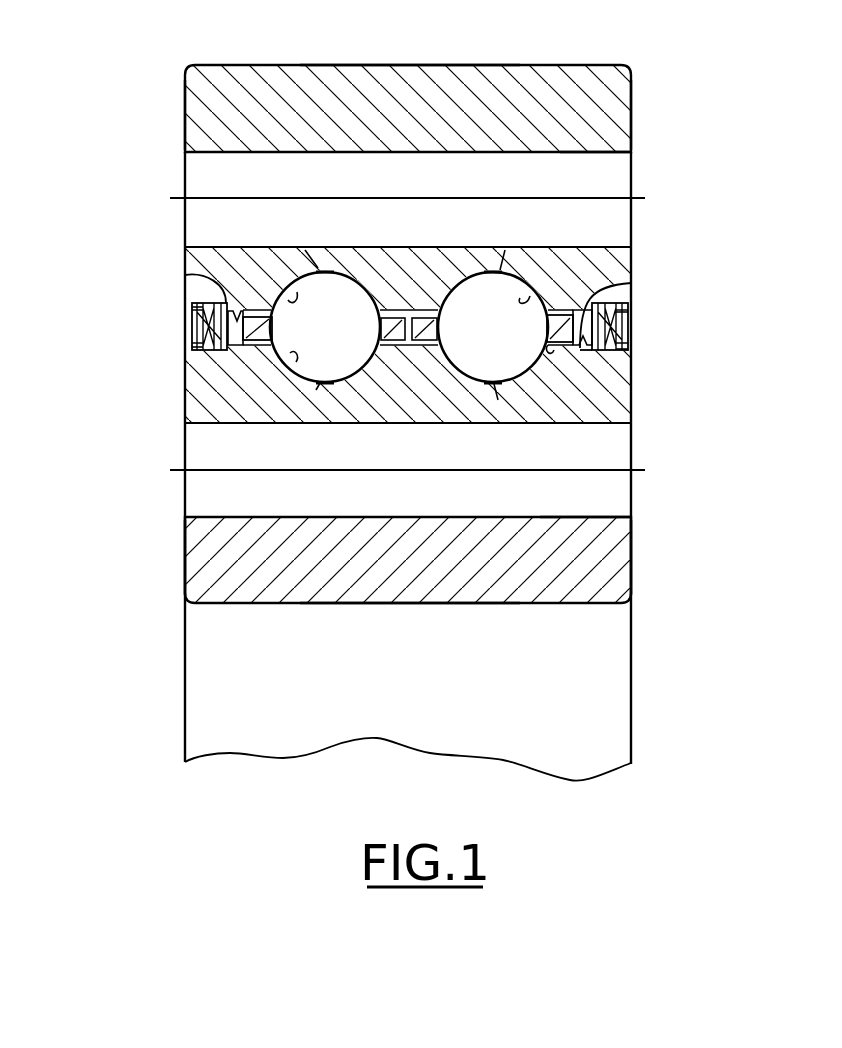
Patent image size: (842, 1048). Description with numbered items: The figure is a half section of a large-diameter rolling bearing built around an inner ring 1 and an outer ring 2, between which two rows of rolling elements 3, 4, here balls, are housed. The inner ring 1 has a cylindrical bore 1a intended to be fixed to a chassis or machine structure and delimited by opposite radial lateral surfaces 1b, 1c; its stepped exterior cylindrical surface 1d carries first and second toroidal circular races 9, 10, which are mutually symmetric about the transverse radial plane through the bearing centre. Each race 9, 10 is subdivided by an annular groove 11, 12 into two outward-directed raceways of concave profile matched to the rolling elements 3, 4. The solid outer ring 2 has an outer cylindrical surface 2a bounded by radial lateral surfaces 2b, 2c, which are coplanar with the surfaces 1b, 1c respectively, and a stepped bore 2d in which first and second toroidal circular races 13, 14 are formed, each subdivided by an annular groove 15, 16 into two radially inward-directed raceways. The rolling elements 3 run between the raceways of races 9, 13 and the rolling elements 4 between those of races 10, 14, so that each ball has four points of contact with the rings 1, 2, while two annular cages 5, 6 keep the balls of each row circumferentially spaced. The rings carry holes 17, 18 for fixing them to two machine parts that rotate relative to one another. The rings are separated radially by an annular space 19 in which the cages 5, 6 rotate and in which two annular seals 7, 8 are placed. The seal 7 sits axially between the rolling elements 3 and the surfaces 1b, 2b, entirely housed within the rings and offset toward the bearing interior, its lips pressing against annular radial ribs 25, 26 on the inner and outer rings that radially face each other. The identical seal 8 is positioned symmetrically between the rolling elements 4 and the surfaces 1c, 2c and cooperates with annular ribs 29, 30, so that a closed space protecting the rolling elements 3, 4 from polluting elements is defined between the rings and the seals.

The inner ring 1 is at (632, 366).
The bore 1a is at (410, 604).
The radial lateral surface 1b is at (185, 559).
The radial lateral surface 1c is at (633, 559).
The stepped exterior cylindrical surface 1d is at (587, 350).
The outer ring 2 is at (632, 80).
The outer cylindrical surface 2a is at (410, 65).
The radial lateral surface 2b is at (185, 111).
The radial lateral surface 2c is at (633, 112).
The stepped bore 2d is at (188, 275).
The rolling elements 3 is at (316, 341).
The rolling elements 4 is at (484, 341).
The annular cage 5 is at (233, 347).
The annular cage 6 is at (567, 342).
The annular seal 7 is at (191, 328).
The annular seal 8 is at (632, 324).
The toroidal circular race 9 is at (290, 353).
The toroidal circular race 10 is at (548, 345).
The annular groove 11 is at (320, 383).
The annular groove 12 is at (494, 384).
The toroidal circular race 13 is at (288, 300).
The toroidal circular race 14 is at (520, 298).
The annular groove 15 is at (318, 268).
The annular groove 16 is at (500, 270).
The hole 17 is at (568, 515).
The hole 18 is at (588, 153).
The annular space 19 is at (605, 284).
The annular radial rib 25 is at (192, 348).
The annular radial rib 26 is at (192, 307).
The annular rib 29 is at (629, 350).
The annular rib 30 is at (625, 312).